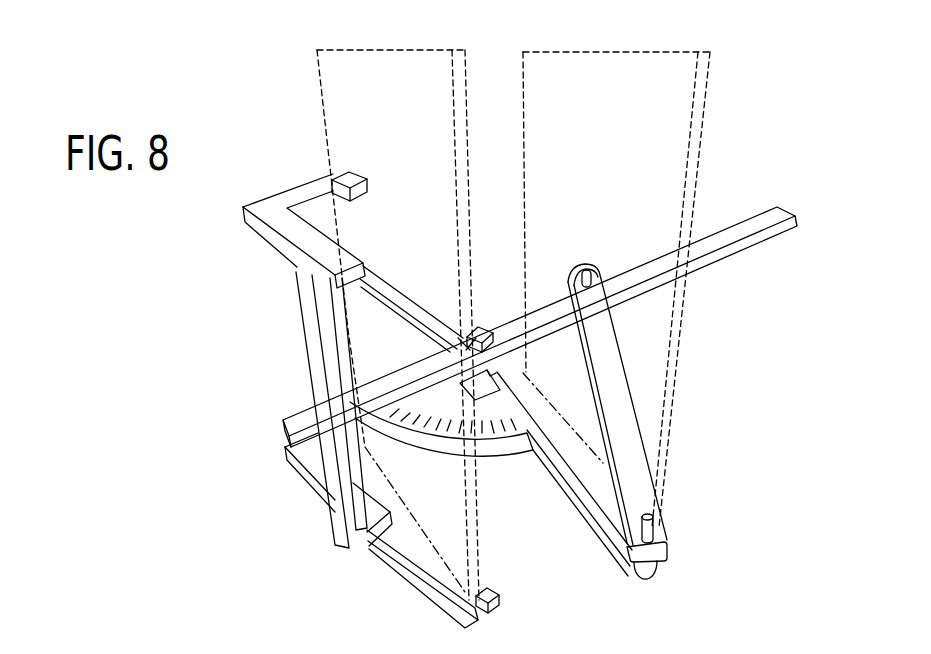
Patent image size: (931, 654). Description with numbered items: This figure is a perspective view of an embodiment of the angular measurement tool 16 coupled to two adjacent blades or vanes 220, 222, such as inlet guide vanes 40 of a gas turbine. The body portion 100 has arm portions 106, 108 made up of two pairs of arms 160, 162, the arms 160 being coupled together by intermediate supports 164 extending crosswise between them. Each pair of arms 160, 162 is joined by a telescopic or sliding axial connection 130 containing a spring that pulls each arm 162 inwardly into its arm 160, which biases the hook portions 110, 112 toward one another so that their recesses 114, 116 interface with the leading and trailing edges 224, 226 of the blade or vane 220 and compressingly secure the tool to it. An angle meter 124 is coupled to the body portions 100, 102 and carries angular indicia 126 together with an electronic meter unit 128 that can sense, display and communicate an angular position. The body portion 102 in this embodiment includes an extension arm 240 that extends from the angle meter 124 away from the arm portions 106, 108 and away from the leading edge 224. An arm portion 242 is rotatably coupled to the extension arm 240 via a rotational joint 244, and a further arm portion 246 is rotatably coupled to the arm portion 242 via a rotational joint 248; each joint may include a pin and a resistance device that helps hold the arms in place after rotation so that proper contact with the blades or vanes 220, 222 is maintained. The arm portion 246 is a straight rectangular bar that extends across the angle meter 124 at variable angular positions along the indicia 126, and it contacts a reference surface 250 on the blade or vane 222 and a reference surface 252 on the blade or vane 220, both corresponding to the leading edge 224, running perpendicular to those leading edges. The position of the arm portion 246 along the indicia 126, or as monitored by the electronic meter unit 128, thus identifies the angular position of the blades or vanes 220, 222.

The angular measurement tool 16 is at (494, 393).
The inlet guide vanes 40 is at (508, 300).
The body portion 100 is at (382, 393).
The body portion 102 is at (561, 396).
The arm portion 106 is at (305, 509).
The arm portion 108 is at (396, 609).
The hook portion 110 is at (330, 210).
The hook portion 112 is at (490, 322).
The recess 114 is at (348, 198).
The recess 116 is at (462, 337).
The angle meter 124 is at (444, 469).
The indicia 126 is at (436, 430).
The electronic meter unit 128 is at (492, 380).
The telescopic or sliding axial connection 130 is at (366, 549).
The arms 160 is at (308, 358).
The arms 162 is at (401, 434).
The intermediate supports 164 is at (308, 342).
The blade or vane 220 is at (346, 62).
The blade or vane 222 is at (613, 72).
The leading edge 224 is at (467, 120).
The trailing edge 226 is at (316, 78).
The extension arm 240 is at (573, 505).
The arm portion 242 is at (656, 377).
The rotational joint 244 is at (655, 527).
The arm portion 246 is at (742, 230).
The rotational joint 248 is at (590, 268).
The reference surface 250 is at (700, 128).
The reference surface 252 is at (470, 200).